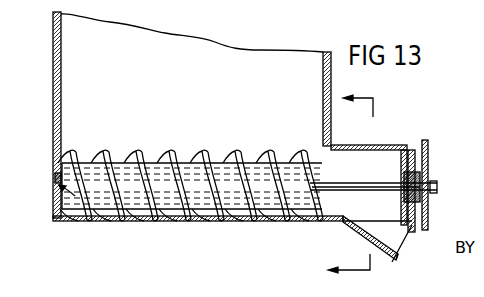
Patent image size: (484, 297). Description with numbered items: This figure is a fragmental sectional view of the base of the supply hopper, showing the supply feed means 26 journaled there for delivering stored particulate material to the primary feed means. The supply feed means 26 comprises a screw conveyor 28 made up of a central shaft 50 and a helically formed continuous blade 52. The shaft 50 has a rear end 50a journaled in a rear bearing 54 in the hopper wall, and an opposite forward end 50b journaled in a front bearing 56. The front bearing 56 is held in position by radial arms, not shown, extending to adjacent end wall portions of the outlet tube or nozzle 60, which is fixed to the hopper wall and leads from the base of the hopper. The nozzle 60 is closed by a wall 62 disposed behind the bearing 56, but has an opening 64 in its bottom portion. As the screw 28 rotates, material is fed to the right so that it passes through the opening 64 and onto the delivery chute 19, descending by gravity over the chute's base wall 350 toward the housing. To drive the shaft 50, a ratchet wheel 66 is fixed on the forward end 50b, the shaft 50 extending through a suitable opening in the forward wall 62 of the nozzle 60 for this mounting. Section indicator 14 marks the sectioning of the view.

The section line 14- 14 is at (362, 184).
The delivery chute 19 is at (406, 253).
The supply feed means 26 is at (190, 178).
The screw conveyor 28 is at (171, 151).
The central shaft 50 is at (178, 211).
The rear end of shaft 50a is at (57, 178).
The forward end of shaft 50b is at (438, 189).
The helically formed continuous blade 52 is at (105, 151).
The rear bearing 54 is at (58, 175).
The front bearing 56 is at (405, 180).
The outlet tube or nozzle 60 is at (336, 147).
The wall 62 is at (394, 149).
The opening 64 is at (388, 224).
The ratchet wheel 66 is at (429, 160).
The base wall 350 is at (345, 231).